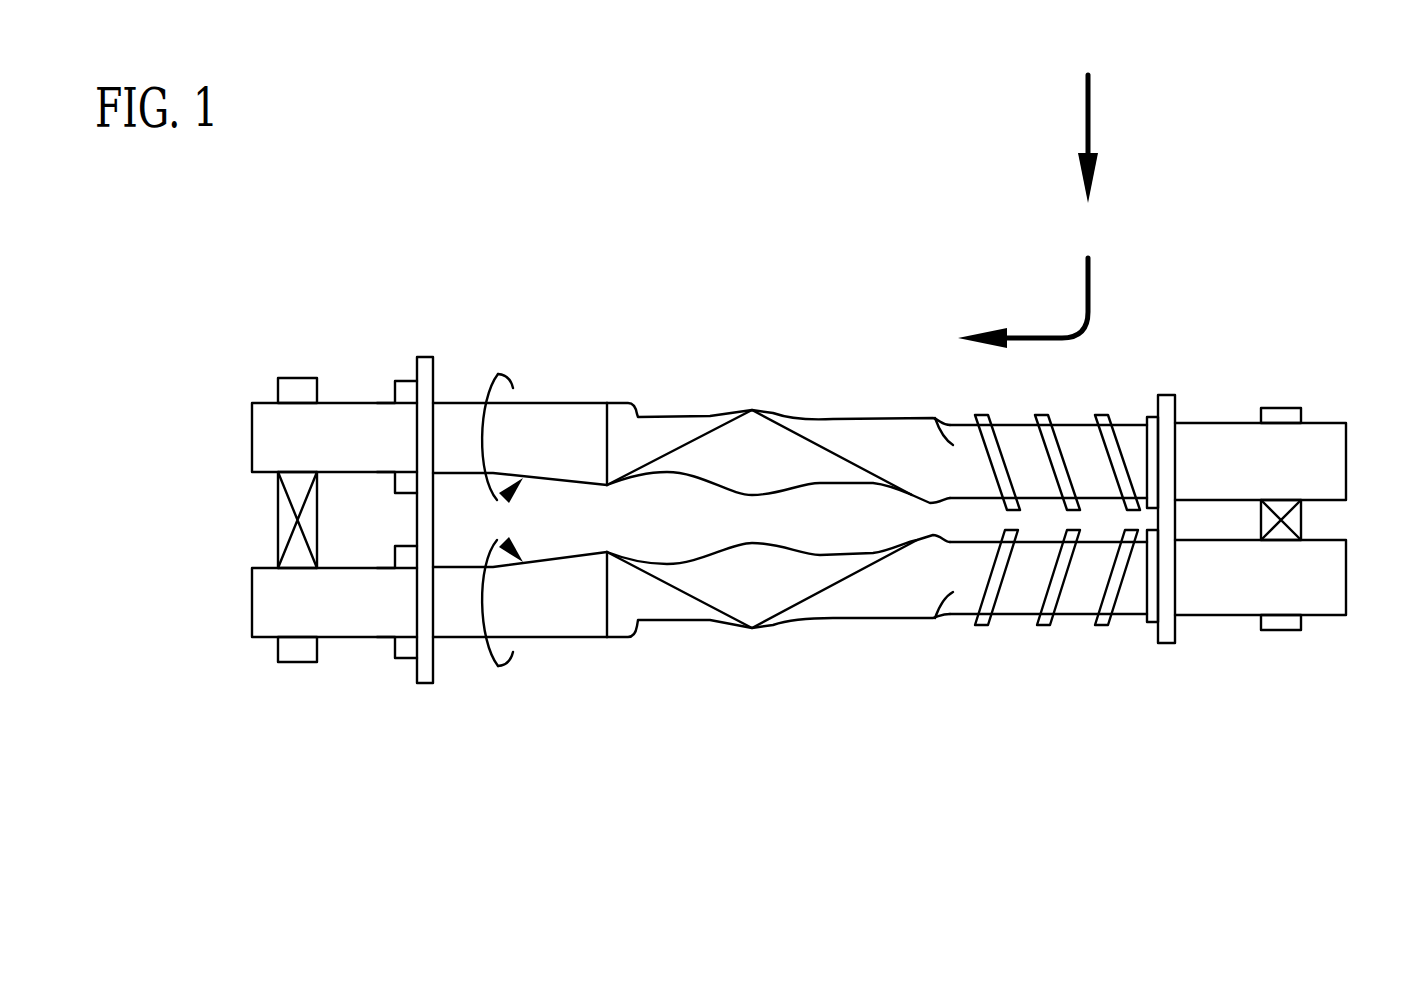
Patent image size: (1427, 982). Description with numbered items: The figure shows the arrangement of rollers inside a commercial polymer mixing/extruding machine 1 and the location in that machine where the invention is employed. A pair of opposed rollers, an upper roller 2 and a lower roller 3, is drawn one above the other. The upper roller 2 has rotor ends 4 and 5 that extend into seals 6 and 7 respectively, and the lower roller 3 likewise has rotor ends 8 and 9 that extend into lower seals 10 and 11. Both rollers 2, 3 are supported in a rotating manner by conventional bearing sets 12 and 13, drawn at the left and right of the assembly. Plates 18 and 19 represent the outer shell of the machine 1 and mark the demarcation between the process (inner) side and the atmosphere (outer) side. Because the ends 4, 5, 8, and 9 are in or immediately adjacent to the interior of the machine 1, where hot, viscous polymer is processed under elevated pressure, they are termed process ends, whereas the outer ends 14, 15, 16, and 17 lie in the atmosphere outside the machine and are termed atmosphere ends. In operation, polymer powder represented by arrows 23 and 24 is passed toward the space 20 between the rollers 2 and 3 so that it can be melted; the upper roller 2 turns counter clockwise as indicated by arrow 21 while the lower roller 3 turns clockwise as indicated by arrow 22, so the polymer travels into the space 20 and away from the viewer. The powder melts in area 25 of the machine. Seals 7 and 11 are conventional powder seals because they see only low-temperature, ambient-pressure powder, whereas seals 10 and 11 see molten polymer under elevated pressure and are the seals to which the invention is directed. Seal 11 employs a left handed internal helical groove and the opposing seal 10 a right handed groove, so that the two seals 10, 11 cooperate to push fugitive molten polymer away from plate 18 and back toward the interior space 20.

The polymer mixing/extruding machine 1 is at (803, 222).
The upper roller 2 is at (893, 440).
The lower roller 3 is at (898, 590).
The rotor end 4 is at (450, 420).
The rotor end 5 is at (1128, 438).
The seal 6 is at (330, 403).
The seal 7 is at (1152, 430).
The rotor end 8 is at (455, 605).
The rotor end 9 is at (1083, 587).
The lower seal 10 is at (400, 648).
The lower seal 11 is at (403, 393).
The bearing set 12 is at (277, 513).
The bearing set 13 is at (1280, 630).
The outer end 14 is at (252, 423).
The outer end 15 is at (1347, 452).
The outer end 16 is at (252, 598).
The outer end 17 is at (1347, 572).
The plate 18 is at (415, 366).
The plate 19 is at (1177, 412).
The space 20 is at (687, 498).
The arrow 21 is at (498, 374).
The arrow 22 is at (498, 666).
The arrow 23 is at (1090, 112).
The arrow 24 is at (1080, 327).
The area 25 is at (920, 407).